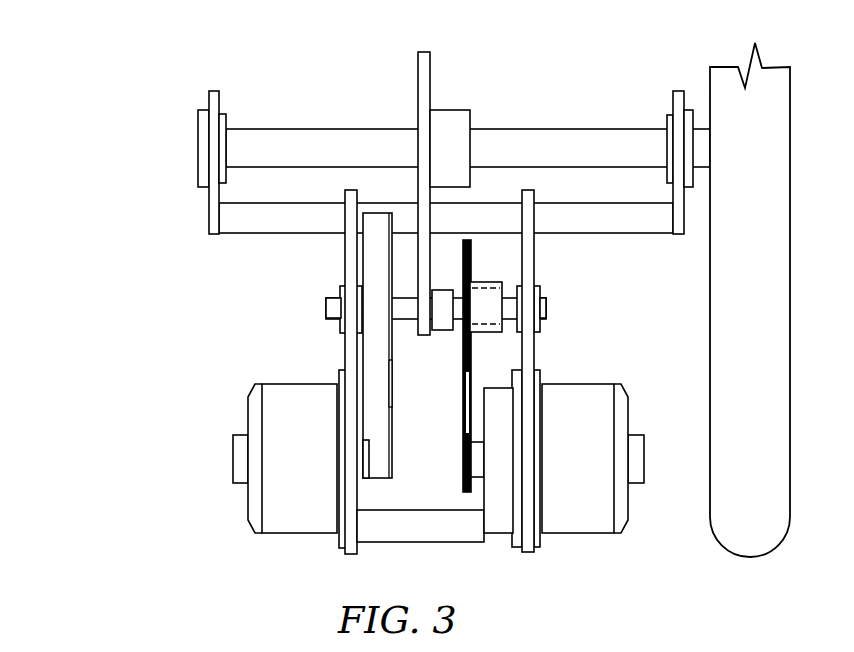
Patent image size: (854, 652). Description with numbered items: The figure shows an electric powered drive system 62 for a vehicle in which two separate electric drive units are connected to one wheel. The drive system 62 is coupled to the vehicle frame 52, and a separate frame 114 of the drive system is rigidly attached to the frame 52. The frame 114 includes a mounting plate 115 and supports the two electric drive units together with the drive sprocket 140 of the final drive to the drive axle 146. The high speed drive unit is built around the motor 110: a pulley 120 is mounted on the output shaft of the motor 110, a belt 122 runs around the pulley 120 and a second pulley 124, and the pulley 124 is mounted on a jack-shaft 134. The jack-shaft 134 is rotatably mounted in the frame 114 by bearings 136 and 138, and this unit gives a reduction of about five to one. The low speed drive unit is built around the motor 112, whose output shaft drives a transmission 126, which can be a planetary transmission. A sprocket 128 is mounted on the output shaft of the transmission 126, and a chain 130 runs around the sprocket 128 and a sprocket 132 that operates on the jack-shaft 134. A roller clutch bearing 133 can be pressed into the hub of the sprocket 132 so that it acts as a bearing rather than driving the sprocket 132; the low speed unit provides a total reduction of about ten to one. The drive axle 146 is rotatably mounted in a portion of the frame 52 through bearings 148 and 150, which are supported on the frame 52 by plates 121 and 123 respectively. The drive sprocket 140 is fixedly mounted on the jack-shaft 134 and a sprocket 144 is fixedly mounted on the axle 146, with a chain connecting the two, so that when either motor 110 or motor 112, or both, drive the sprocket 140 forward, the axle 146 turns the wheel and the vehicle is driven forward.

The drive system 62 is at (153, 148).
The frame 52 is at (281, 226).
The motor 110 is at (308, 462).
The motor 112 is at (594, 461).
The frame 114 is at (493, 226).
The mounting plate 115 is at (349, 269).
The pulley 120 is at (392, 460).
The plate 121 is at (213, 102).
The belt 122 is at (383, 417).
The plate 123 is at (678, 100).
The pulley 124 is at (364, 342).
The transmission 126 is at (495, 523).
The sprocket 128 is at (463, 468).
The chain 130 is at (463, 420).
The sprocket 132 is at (495, 283).
The roller clutch bearing 133 is at (571, 371).
The jack-shaft 134 is at (331, 310).
The bearing 136 is at (539, 296).
The bearing 138 is at (340, 295).
The drive sprocket 140 is at (437, 317).
The sprocket 144 is at (468, 156).
The drive axle 146 is at (582, 156).
The bearing 148 is at (224, 128).
The bearing 150 is at (668, 116).